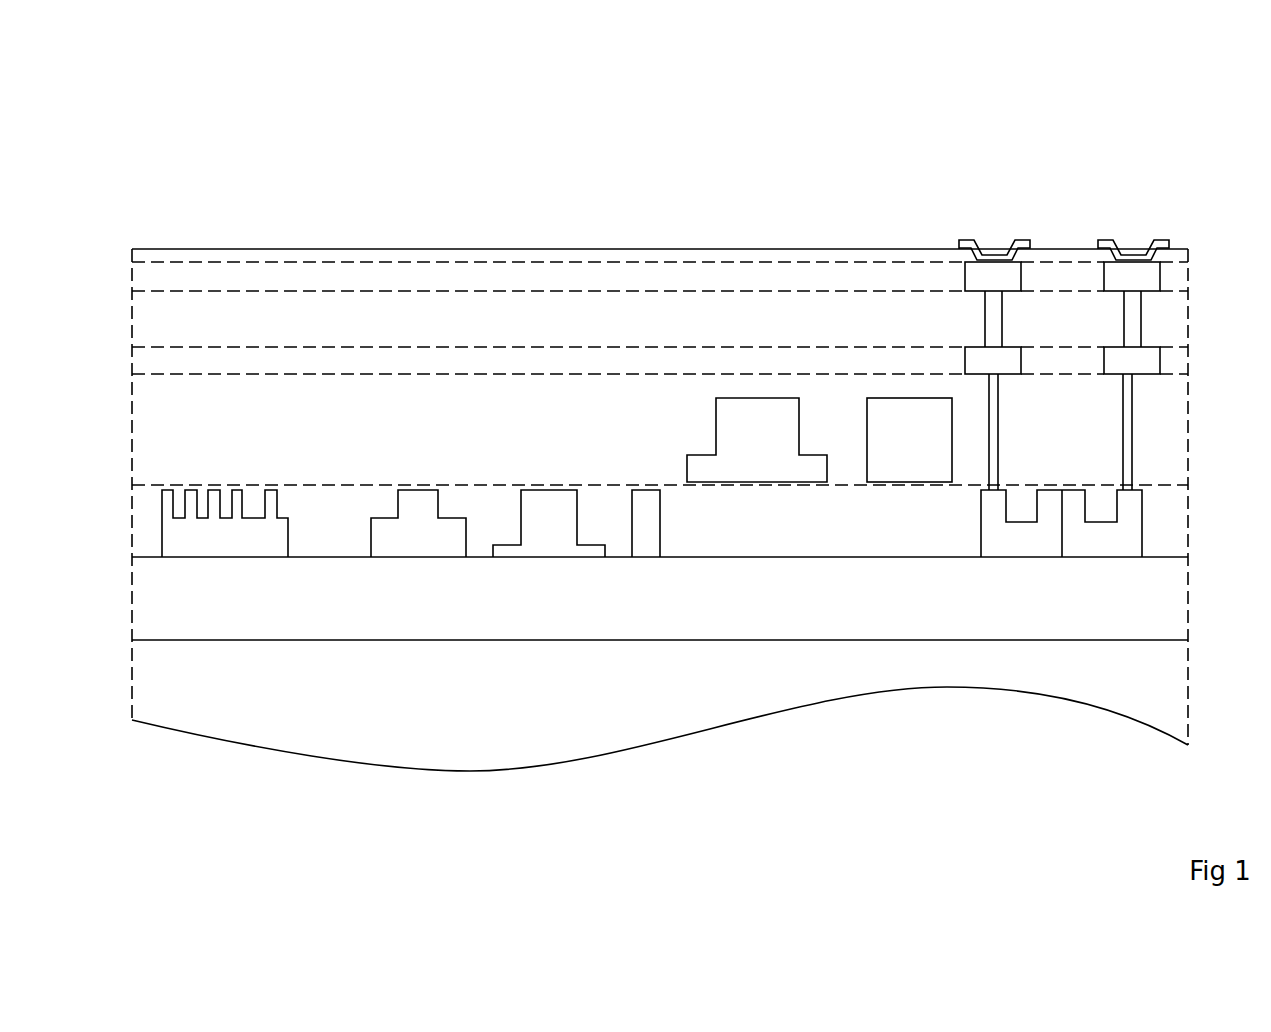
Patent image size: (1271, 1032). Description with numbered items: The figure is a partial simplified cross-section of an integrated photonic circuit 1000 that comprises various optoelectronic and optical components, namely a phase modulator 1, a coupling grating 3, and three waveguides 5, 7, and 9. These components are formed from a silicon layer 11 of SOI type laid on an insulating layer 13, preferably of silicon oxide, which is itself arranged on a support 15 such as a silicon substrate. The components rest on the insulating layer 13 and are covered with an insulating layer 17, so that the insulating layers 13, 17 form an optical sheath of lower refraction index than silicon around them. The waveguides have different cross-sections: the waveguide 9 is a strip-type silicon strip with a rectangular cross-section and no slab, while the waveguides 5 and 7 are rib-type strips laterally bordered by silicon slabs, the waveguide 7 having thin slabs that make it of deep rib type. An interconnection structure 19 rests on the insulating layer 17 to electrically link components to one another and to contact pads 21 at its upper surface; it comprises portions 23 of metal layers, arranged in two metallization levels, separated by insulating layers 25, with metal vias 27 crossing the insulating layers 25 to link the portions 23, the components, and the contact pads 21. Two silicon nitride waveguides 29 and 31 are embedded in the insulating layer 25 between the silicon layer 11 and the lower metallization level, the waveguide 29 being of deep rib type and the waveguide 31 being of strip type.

The integrated photonic circuit 1000 is at (179, 119).
The phase modulator 1 is at (1096, 561).
The coupling grating 3 is at (224, 560).
The waveguide 5 is at (418, 560).
The waveguide 7 is at (545, 560).
The waveguide 9 is at (645, 560).
The silicon layer 11 is at (1145, 530).
The insulating layer 13 is at (1173, 593).
The support 15 is at (1173, 688).
The insulating layer 17 is at (129, 531).
The interconnection structure 19 is at (114, 248).
The contact pad 21 is at (993, 255).
The portion of metal layer 23 is at (1019, 276).
The insulating layer 25 is at (203, 258).
The metal via 27 is at (1003, 322).
The silicon nitride waveguide 29 is at (716, 437).
The silicon nitride waveguide 31 is at (867, 437).